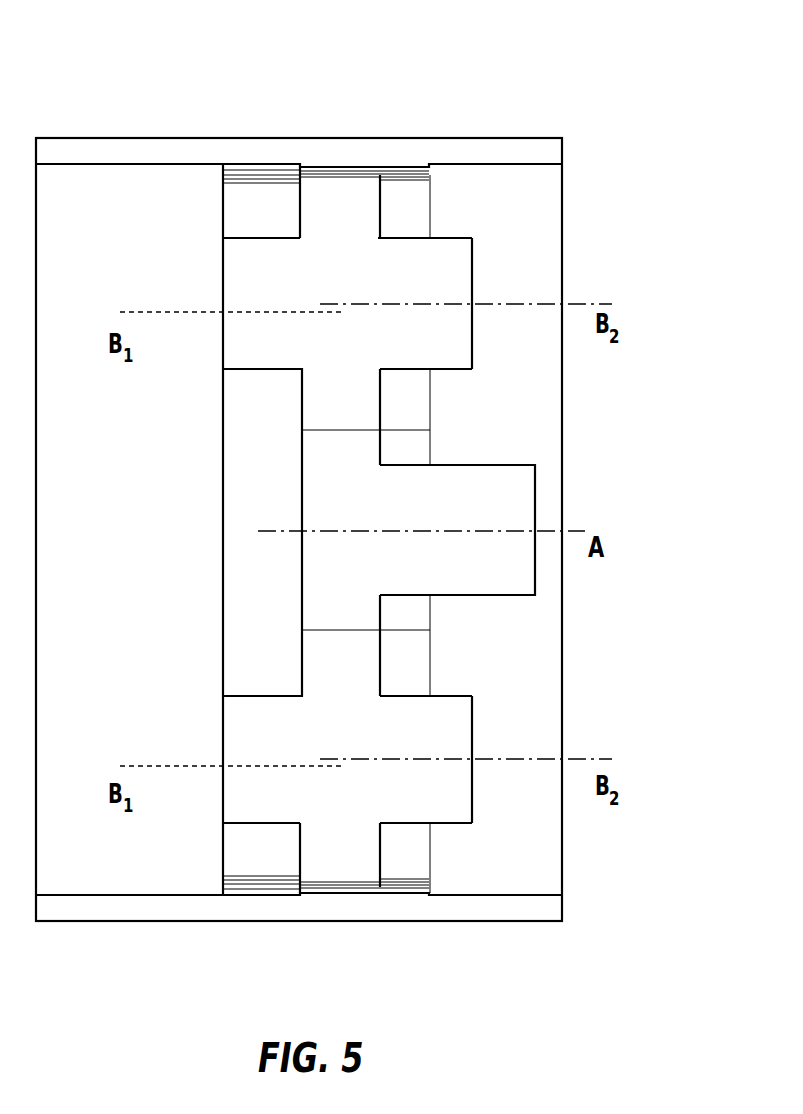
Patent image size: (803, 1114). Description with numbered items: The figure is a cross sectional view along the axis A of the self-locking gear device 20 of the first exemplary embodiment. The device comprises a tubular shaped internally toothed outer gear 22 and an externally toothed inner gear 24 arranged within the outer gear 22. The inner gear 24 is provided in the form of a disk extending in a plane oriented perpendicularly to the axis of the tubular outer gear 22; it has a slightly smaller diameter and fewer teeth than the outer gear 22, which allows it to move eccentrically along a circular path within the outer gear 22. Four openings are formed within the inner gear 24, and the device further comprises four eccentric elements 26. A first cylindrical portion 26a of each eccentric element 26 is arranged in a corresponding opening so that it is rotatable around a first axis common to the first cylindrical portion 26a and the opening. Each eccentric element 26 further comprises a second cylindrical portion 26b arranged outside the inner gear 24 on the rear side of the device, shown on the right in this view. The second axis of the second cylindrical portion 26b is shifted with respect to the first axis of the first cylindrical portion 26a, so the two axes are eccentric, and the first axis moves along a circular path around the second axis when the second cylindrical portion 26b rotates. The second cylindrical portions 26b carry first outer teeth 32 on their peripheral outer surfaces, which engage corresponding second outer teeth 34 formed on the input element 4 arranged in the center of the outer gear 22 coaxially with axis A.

The self-locking gear device 20 is at (613, 104).
The internally toothed outer gear 22 is at (412, 148).
The externally toothed inner gear 24 is at (232, 435).
The eccentric element 26 is at (216, 339).
The first cylindrical portion 26a is at (240, 261).
The second cylindrical portion 26b is at (447, 278).
The first outer teeth 32 is at (413, 397).
The second outer teeth 34 is at (405, 455).
The input element 4 is at (515, 498).